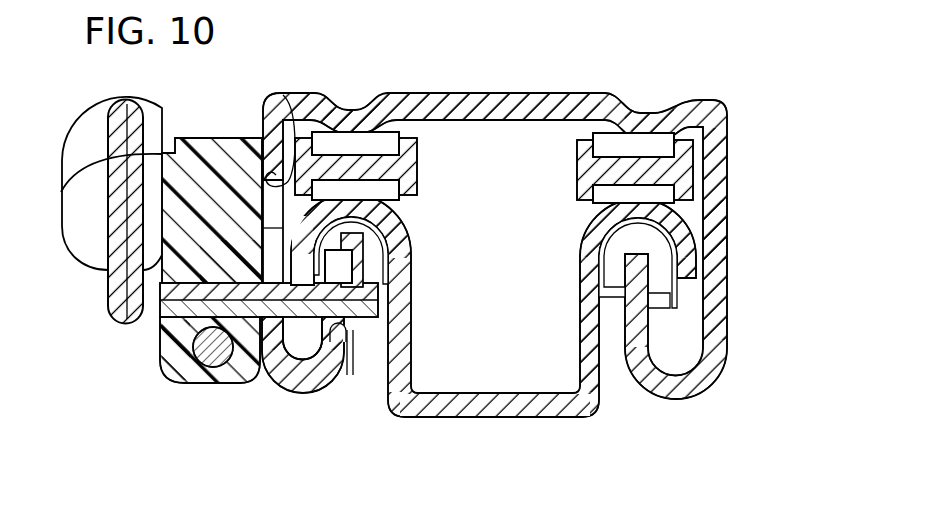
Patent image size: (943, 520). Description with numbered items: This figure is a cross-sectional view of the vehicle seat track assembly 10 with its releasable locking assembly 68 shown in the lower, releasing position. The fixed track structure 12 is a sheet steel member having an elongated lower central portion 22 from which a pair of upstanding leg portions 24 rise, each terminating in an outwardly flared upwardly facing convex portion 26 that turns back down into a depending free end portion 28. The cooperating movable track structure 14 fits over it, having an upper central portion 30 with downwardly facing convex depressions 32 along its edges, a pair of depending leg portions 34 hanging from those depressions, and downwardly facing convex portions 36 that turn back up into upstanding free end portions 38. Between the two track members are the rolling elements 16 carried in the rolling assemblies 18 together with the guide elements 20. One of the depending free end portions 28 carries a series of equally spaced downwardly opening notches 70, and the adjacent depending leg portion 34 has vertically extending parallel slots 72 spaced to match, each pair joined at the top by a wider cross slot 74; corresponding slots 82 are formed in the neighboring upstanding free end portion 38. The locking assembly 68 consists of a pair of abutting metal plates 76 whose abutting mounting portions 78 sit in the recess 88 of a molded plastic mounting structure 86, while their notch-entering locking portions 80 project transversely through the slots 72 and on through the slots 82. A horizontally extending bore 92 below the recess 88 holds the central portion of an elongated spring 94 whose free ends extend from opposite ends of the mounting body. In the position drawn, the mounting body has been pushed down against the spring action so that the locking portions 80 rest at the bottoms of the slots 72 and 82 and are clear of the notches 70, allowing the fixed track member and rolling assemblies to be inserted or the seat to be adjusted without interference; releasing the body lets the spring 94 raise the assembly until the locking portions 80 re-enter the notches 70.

The vehicle seat track assembly 10 is at (752, 100).
The fixed track structure 12 is at (484, 422).
The movable track structure 14 is at (728, 185).
The rolling elements 16 is at (398, 187).
The rolling assemblies 18 is at (426, 146).
The guide elements 20 is at (386, 260).
The lower central portion 22 is at (526, 403).
The upstanding leg portions 24 is at (414, 325).
The outwardly flared upwardly facing convex portions 26 is at (397, 217).
The depending free end portions 28 is at (688, 266).
The upper central portion 30 is at (556, 107).
The downwardly facing convex depressions 32 is at (345, 105).
The depending leg portions 34 is at (263, 132).
The downwardly facing convex portions 36 is at (311, 392).
The upstanding free end portions 38 is at (356, 353).
The releasable locking assembly 68 is at (200, 136).
The downwardly opening notches 70 is at (302, 338).
The vertically extending parallel slots 72 is at (249, 378).
The cross slot 74 is at (273, 112).
The abutting metal plates 76 is at (156, 318).
The mounting portions 78 is at (206, 272).
The locking portions 80 is at (380, 296).
The slots 82 is at (353, 355).
The mounting structure 86 is at (172, 207).
The recess 88 is at (162, 297).
The bore 92 is at (200, 360).
The spring 94 is at (212, 360).